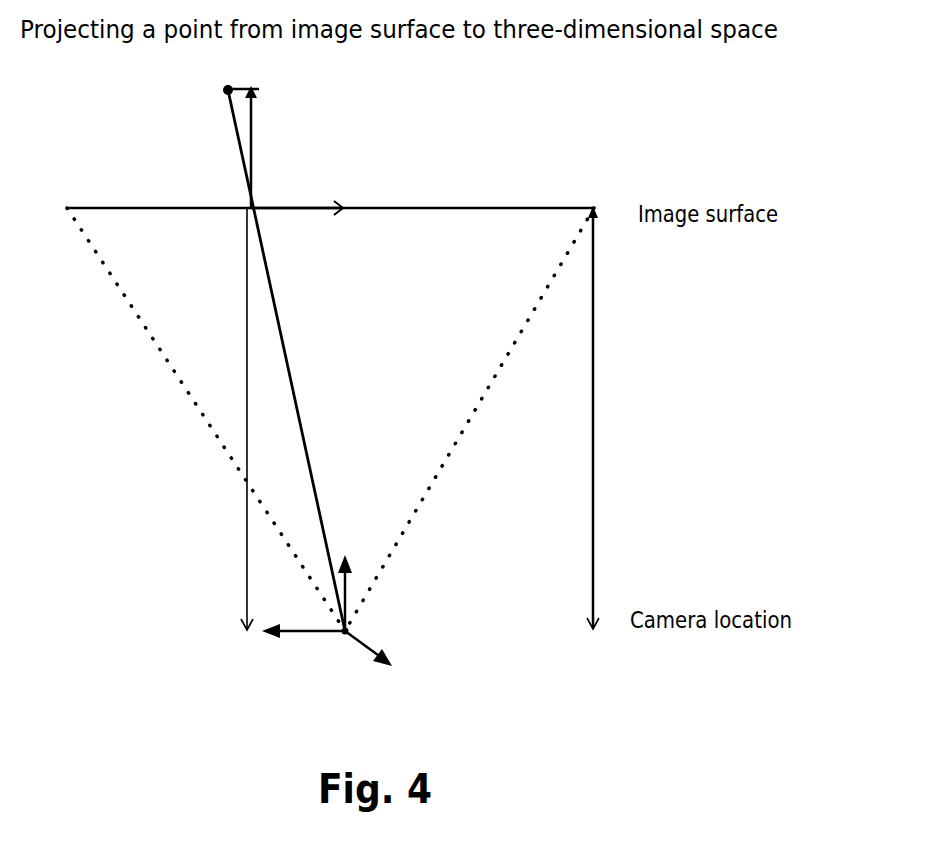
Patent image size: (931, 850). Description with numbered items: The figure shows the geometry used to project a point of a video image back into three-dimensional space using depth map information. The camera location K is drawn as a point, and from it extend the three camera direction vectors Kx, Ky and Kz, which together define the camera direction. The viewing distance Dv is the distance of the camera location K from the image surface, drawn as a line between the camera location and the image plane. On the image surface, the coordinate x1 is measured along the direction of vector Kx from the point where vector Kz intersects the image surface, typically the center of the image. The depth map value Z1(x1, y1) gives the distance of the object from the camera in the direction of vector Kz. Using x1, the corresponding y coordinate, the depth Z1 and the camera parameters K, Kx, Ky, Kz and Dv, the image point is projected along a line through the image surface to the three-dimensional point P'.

The coordinate x1 is at (297, 220).
The point P' in three-dimensional space P is at (238, 76).
The depth map Z1 is at (236, 419).
The viewing distance Dv is at (615, 417).
The camera location K is at (360, 631).
The camera direction vector Kx is at (288, 646).
The camera direction vector Ky is at (406, 674).
The camera direction vector Kz is at (366, 533).